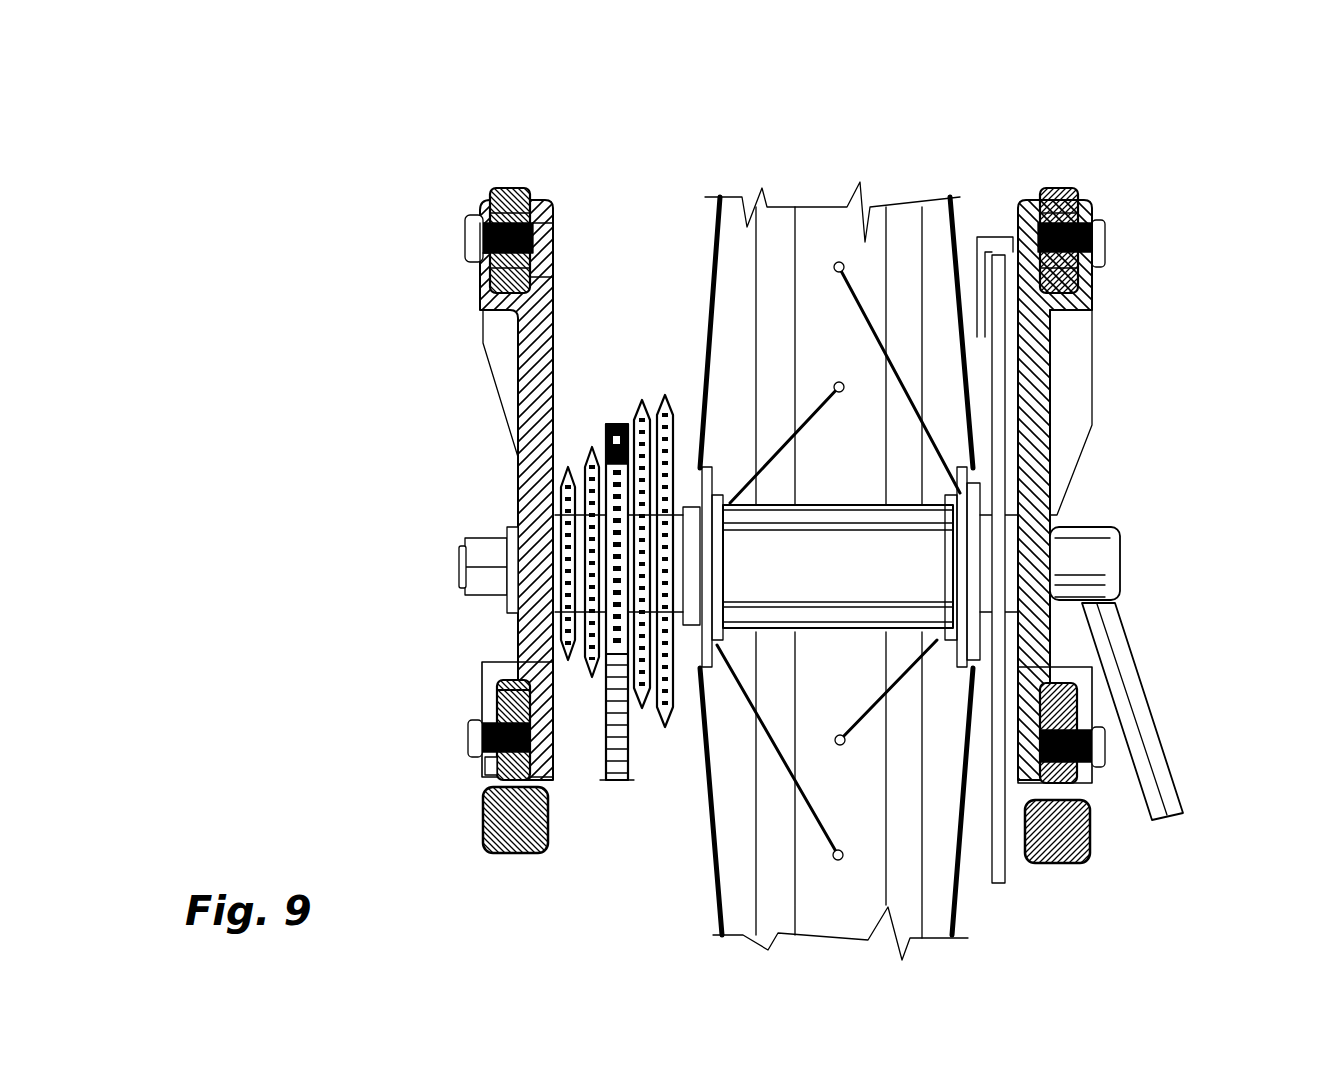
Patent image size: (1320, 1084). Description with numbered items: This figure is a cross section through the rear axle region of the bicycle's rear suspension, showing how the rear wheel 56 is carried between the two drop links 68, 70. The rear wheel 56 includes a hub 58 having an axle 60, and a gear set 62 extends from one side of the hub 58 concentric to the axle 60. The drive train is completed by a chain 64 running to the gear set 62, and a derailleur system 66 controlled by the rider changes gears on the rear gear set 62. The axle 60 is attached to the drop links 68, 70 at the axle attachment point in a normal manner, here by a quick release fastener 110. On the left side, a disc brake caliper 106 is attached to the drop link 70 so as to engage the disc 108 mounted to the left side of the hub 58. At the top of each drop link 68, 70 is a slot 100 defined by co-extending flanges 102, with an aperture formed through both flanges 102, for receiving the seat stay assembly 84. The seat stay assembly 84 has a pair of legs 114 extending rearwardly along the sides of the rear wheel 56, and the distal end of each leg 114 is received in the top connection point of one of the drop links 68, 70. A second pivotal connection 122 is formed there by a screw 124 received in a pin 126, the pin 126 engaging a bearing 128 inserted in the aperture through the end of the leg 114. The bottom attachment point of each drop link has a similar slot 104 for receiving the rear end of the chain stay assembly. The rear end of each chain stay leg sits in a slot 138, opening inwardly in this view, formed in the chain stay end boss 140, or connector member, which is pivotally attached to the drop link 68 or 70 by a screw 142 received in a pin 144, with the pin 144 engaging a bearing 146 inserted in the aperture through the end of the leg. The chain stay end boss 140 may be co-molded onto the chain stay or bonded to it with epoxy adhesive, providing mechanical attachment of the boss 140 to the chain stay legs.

The rear wheel 56 is at (806, 225).
The hub 58 is at (807, 597).
The axle 60 is at (465, 565).
The gear set 62 is at (642, 400).
The chain 64 is at (606, 432).
The derailleur system 66 is at (630, 750).
The drop link 68 is at (483, 305).
The drop link 70 is at (1092, 262).
The seat stay assembly 84 is at (504, 190).
The slot 100 is at (480, 222).
The flanges 102 is at (477, 218).
The slot 104 is at (483, 763).
The disc brake caliper 106 is at (995, 236).
The disc 108 is at (1008, 857).
The quick release fastener 110 is at (1110, 645).
The legs 114 is at (514, 190).
The second pivotal connection 122 is at (460, 242).
The screw 124 is at (470, 253).
The pin 126 is at (553, 223).
The bearing 128 is at (553, 277).
The slot 138 is at (546, 855).
The chain stay end boss 140 is at (512, 855).
The screw 142 is at (470, 735).
The pin 144 is at (553, 727).
The bearing 146 is at (483, 707).